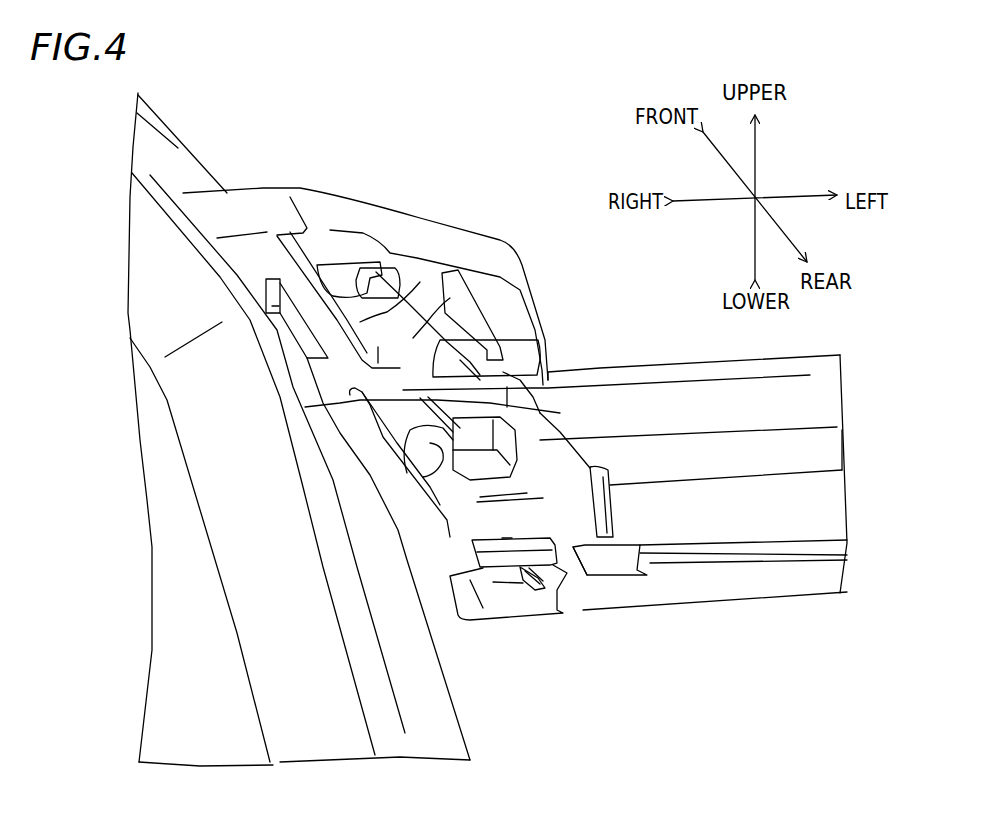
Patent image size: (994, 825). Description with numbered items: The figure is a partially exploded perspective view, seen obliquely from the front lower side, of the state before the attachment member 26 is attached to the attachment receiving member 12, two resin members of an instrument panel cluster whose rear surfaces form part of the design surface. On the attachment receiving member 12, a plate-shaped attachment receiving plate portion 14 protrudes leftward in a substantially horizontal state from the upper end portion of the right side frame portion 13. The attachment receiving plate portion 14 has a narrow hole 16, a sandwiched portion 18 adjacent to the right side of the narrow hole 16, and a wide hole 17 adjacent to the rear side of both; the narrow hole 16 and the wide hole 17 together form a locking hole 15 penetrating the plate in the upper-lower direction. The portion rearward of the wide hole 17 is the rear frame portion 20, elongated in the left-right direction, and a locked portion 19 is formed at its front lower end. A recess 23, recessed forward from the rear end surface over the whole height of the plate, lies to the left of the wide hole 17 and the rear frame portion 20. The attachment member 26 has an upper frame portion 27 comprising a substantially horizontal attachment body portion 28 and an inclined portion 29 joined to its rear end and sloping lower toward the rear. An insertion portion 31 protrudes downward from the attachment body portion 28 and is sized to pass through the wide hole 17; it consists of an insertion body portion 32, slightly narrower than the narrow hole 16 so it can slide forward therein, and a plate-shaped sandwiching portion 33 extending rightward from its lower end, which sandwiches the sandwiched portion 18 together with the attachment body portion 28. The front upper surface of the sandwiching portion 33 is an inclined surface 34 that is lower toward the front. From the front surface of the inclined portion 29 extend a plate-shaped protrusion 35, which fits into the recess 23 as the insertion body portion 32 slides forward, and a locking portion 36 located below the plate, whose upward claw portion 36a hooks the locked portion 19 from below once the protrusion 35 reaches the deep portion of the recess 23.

The attachment receiving member 12 is at (136, 580).
The right side frame portion 13 is at (138, 294).
The attachment receiving plate portion 14 is at (485, 250).
The locking hole 15 is at (432, 166).
The narrow hole 16 is at (370, 263).
The wide hole 17 is at (418, 295).
The sandwiched portion 18 is at (343, 280).
The locked portion 19 is at (480, 342).
The rear frame portion 20 is at (470, 290).
The recess 23 is at (530, 403).
The attachment member 26 is at (858, 337).
The upper frame portion 27 is at (905, 393).
The attachment body portion 28 is at (826, 402).
The inclined portion 29 is at (830, 507).
The insertion portion 31 is at (253, 465).
The insertion body portion 32 is at (440, 423).
The sandwiching portion 33 is at (463, 483).
The inclined surface 34 is at (473, 483).
The protrusion 35 is at (640, 570).
The locking portion 36 is at (555, 590).
The claw portion 36a is at (533, 540).